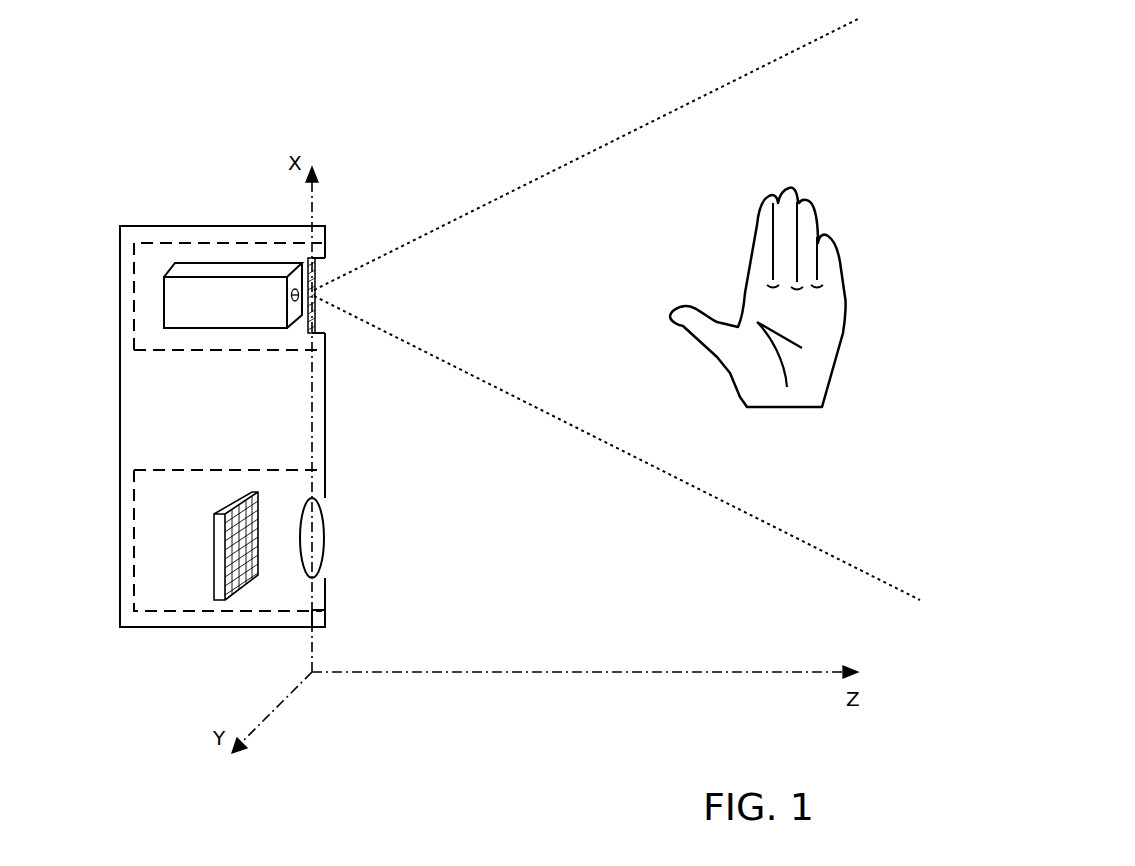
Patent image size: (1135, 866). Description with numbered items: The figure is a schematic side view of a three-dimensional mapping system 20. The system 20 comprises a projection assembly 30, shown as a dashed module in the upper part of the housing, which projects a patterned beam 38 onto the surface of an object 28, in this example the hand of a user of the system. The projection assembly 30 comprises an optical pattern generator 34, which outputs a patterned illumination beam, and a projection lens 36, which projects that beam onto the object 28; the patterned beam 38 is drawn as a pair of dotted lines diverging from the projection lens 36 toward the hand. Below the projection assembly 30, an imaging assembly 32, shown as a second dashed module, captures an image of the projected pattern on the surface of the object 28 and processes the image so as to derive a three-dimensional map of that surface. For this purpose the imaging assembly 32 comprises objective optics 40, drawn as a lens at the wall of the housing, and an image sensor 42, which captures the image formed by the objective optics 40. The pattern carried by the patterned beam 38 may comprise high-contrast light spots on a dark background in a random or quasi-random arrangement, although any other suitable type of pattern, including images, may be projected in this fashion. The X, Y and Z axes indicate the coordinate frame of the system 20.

The 3D mapping system 20 is at (138, 225).
The object 28 is at (840, 258).
The projection assembly 30 is at (186, 242).
The imaging assembly 32 is at (175, 612).
The optical pattern generator 34 is at (245, 263).
The projection lens 36 is at (306, 333).
The patterned beam 38 is at (599, 149).
The objective optics 40 is at (318, 522).
The image sensor 42 is at (214, 514).